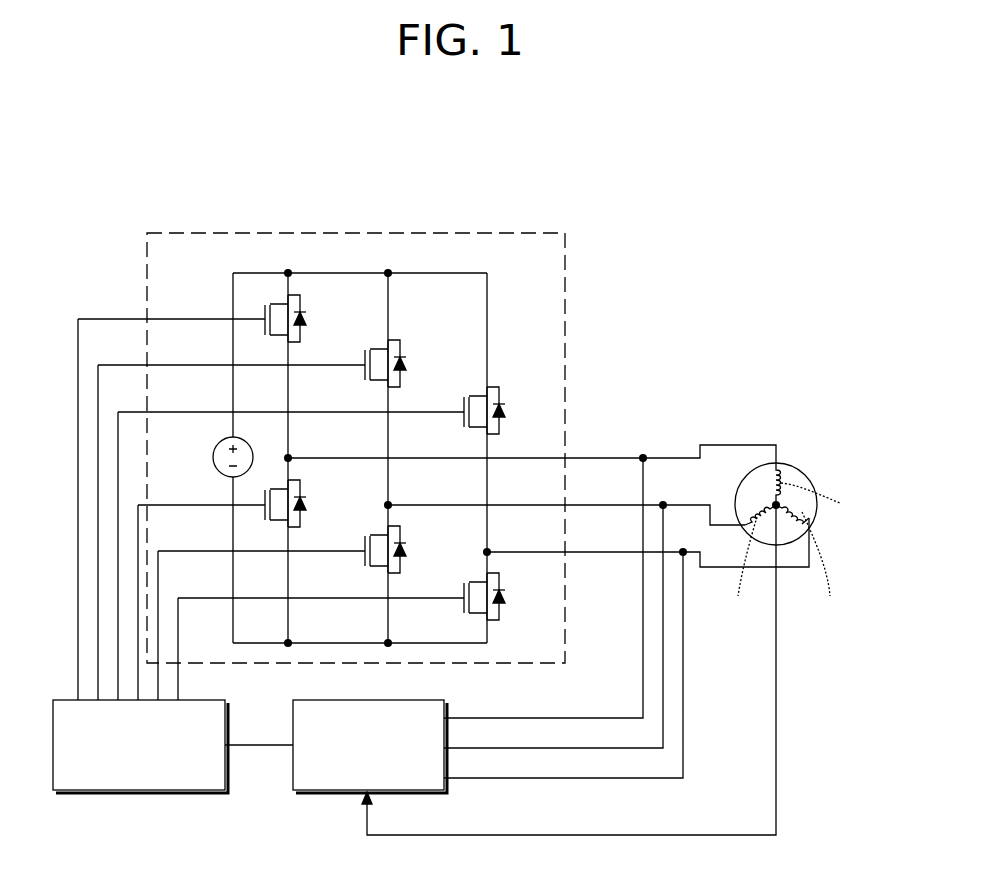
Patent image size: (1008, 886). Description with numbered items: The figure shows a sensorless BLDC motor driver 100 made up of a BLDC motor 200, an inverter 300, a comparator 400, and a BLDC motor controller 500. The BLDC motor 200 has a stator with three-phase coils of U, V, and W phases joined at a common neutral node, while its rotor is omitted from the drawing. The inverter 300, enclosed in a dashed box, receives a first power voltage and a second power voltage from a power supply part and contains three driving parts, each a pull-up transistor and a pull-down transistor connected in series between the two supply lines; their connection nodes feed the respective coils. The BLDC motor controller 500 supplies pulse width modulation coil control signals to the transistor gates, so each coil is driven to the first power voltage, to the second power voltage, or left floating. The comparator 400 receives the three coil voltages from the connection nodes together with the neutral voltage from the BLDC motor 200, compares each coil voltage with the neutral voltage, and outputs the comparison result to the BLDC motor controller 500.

The sensorless BLDC motor driver 100 is at (63, 181).
The BLDC motor 200 is at (799, 468).
The inverter 300 is at (459, 232).
The comparator 400 is at (330, 790).
The BLDC motor controller 500 is at (100, 790).